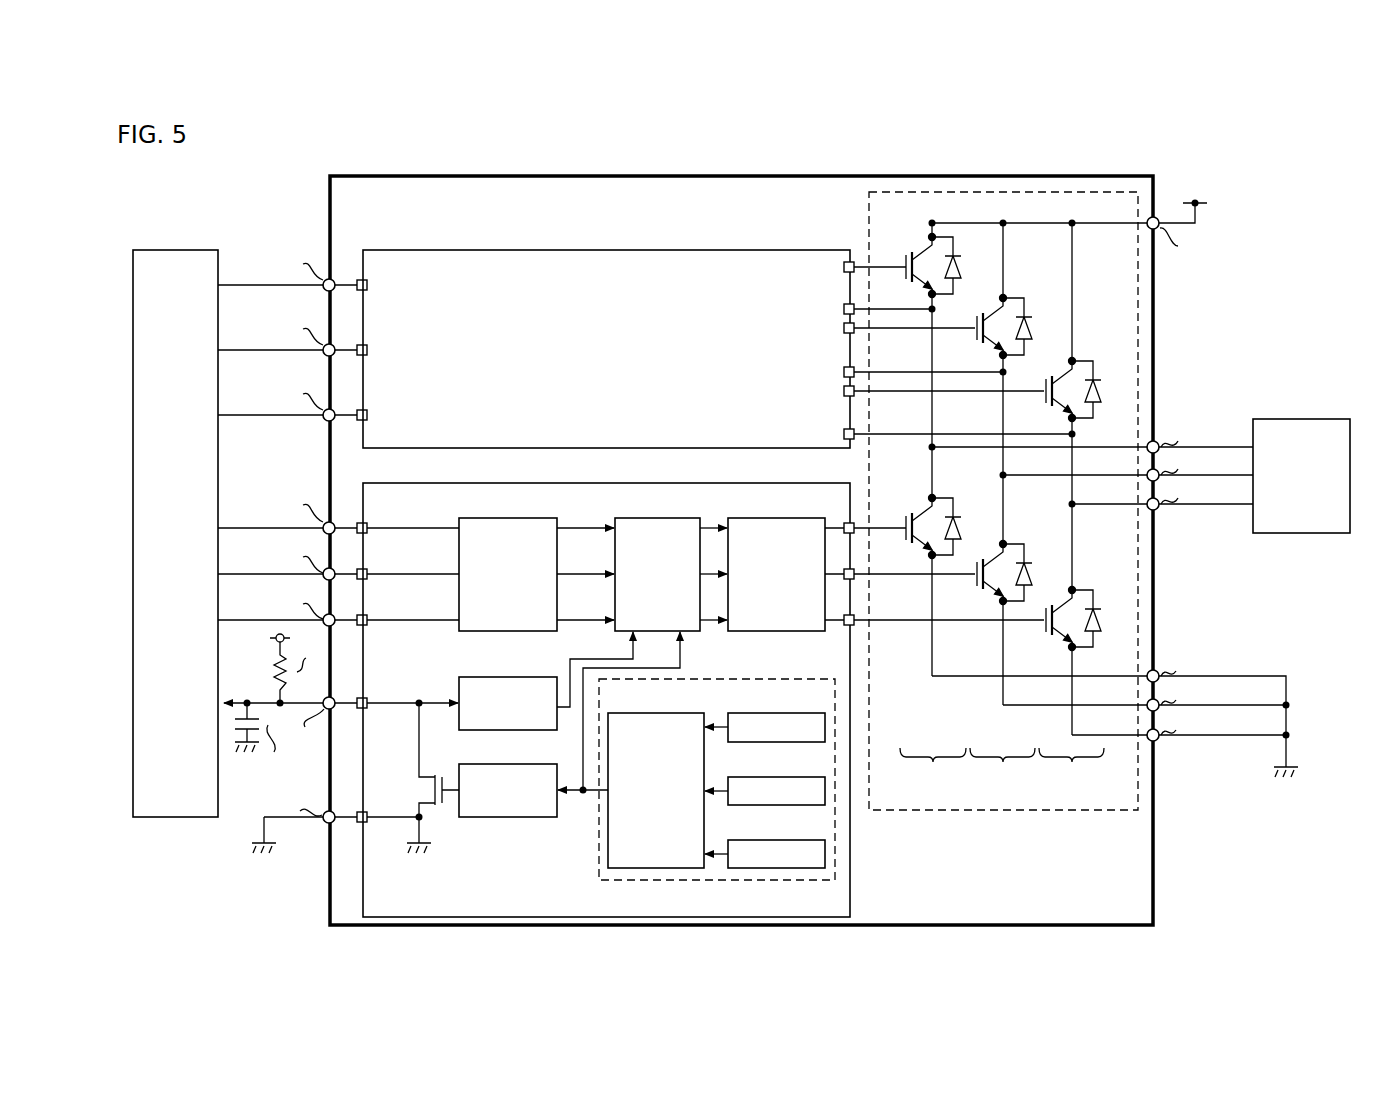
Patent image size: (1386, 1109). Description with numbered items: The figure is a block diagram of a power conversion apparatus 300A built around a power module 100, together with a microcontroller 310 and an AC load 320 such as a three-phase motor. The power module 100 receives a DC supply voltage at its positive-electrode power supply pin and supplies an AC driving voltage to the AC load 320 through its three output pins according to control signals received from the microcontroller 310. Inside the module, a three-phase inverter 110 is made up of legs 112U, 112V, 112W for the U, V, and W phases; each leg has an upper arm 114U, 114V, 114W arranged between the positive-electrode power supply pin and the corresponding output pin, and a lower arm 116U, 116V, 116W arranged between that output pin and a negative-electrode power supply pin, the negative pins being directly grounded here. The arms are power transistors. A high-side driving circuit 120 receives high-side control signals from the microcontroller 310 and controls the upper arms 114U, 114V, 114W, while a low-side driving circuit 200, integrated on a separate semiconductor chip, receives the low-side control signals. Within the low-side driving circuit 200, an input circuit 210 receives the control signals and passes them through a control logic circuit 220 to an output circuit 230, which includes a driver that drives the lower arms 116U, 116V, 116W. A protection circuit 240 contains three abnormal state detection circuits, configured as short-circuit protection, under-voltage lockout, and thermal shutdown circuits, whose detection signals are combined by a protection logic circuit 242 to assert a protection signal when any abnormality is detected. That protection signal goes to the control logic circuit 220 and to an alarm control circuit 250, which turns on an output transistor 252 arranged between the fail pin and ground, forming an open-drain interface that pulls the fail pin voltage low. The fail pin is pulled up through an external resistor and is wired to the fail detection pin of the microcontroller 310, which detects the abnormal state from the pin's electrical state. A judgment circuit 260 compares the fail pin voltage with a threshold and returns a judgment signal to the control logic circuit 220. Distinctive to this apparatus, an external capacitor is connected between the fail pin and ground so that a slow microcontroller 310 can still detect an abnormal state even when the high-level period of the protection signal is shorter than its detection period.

The power module 100 is at (783, 173).
The three-phase inverter 110 is at (1002, 812).
The leg 112U is at (920, 493).
The leg 112V is at (1015, 518).
The leg 112W is at (1087, 548).
The upper arm 114U is at (920, 242).
The upper arm 114V is at (1032, 294).
The upper arm 114W is at (1098, 356).
The lower arm 116U is at (920, 502).
The lower arm 116V is at (1032, 540).
The lower arm 116W is at (1098, 585).
The high-side driving circuit 120 is at (703, 249).
The low-side driving circuit 200 is at (700, 484).
The input circuit 210 is at (488, 515).
The control logic circuit 220 is at (630, 515).
The output circuit 230 is at (758, 515).
The protection circuit 240 is at (752, 679).
The protection logic circuit 242 is at (628, 710).
The alarm control circuit 250 is at (488, 762).
The output transistor 252 is at (445, 806).
The judgment circuit 260 is at (488, 674).
The power conversion apparatus 300A is at (1341, 143).
The microcontroller 310 is at (178, 250).
The AC load 320 is at (1292, 418).